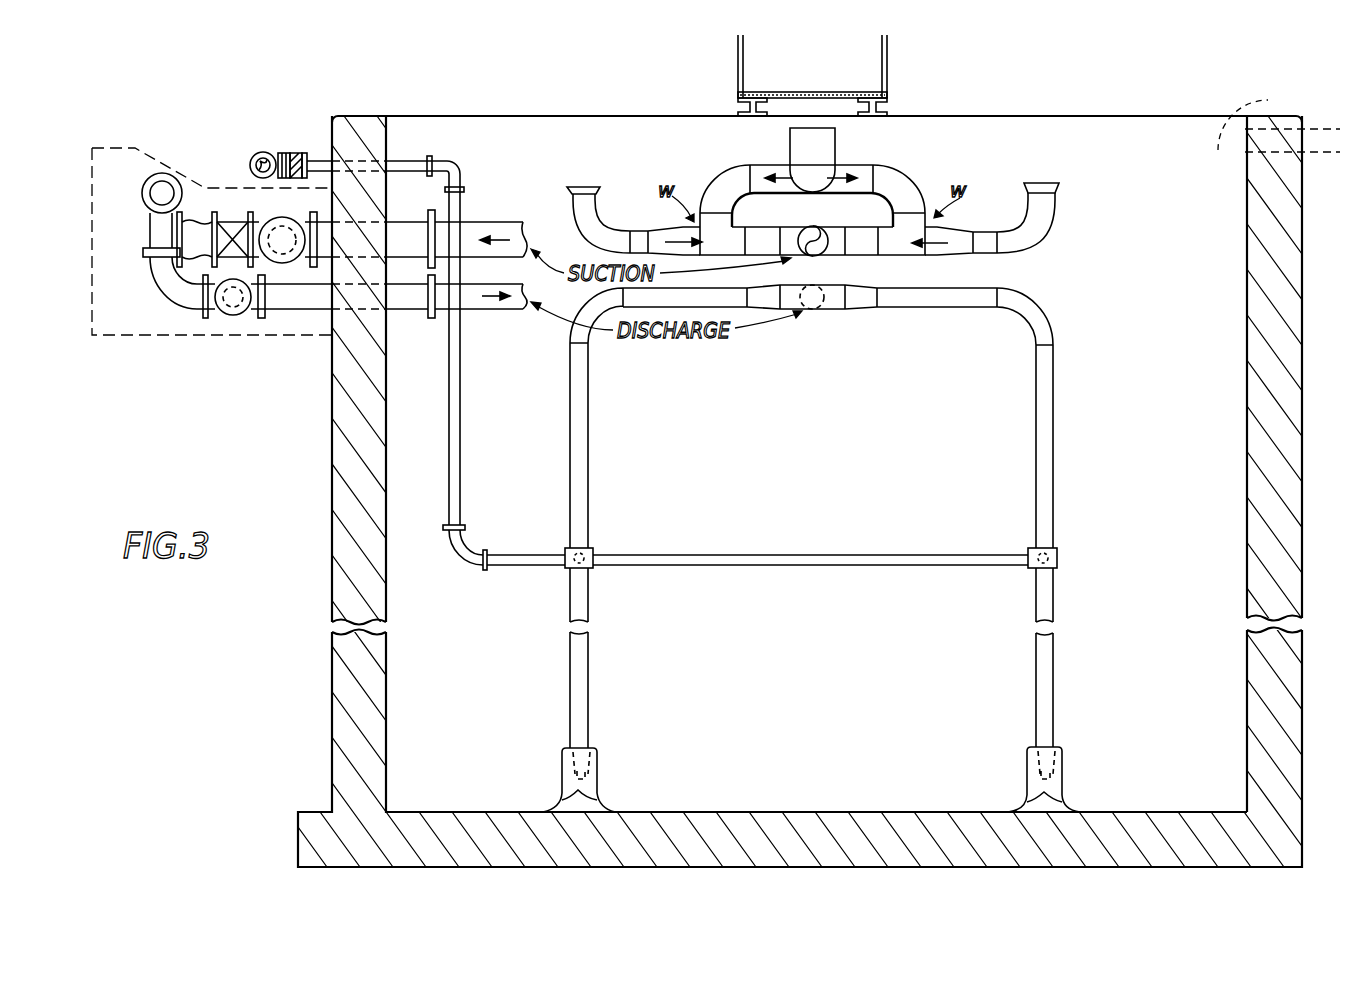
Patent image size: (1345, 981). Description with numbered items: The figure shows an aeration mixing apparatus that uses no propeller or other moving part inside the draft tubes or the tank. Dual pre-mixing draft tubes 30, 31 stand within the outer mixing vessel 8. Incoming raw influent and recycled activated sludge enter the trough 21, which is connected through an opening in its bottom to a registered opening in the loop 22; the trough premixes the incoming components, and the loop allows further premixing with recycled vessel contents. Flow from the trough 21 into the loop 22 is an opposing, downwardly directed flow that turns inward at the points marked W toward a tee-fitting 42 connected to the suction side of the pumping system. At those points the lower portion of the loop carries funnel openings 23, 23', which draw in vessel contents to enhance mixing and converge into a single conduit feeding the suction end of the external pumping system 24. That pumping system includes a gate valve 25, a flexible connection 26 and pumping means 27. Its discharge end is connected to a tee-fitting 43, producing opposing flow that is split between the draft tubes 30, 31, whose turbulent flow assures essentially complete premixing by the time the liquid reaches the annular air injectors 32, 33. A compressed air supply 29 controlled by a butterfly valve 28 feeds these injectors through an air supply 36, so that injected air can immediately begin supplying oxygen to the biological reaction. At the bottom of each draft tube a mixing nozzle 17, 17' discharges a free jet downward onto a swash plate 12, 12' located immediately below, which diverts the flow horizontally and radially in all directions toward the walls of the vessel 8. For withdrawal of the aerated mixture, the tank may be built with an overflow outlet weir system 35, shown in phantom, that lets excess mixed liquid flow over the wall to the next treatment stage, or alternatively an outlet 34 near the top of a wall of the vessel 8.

The outer mixing vessel 8 is at (1295, 213).
The swash plate 12 is at (603, 791).
The swash plate 12' is at (1071, 791).
The mixing nozzle 17 is at (602, 762).
The mixing nozzle 17' is at (1075, 763).
The trough 21 is at (837, 145).
The loop 22 is at (903, 176).
The funnel opening 23 is at (577, 209).
The funnel opening 23' is at (1059, 210).
The external pumping system 24 is at (203, 338).
The gate valve 25 is at (236, 205).
The flexible connection 26 is at (200, 198).
The pumping means 27 is at (143, 190).
The butterfly valve 28 is at (300, 148).
The compressed air supply 29 is at (258, 152).
The pre-mixing draft tube 30 is at (588, 431).
The pre-mixing draft tube 31 is at (1036, 430).
The annular injector 32 is at (592, 548).
The annular injector 33 is at (1057, 553).
The outlet 34 is at (1330, 128).
The overflow outlet weir system 35 is at (1272, 91).
The air supply 36 is at (460, 452).
The tee-fitting 42 is at (821, 229).
The tee-fitting 43 is at (818, 284).